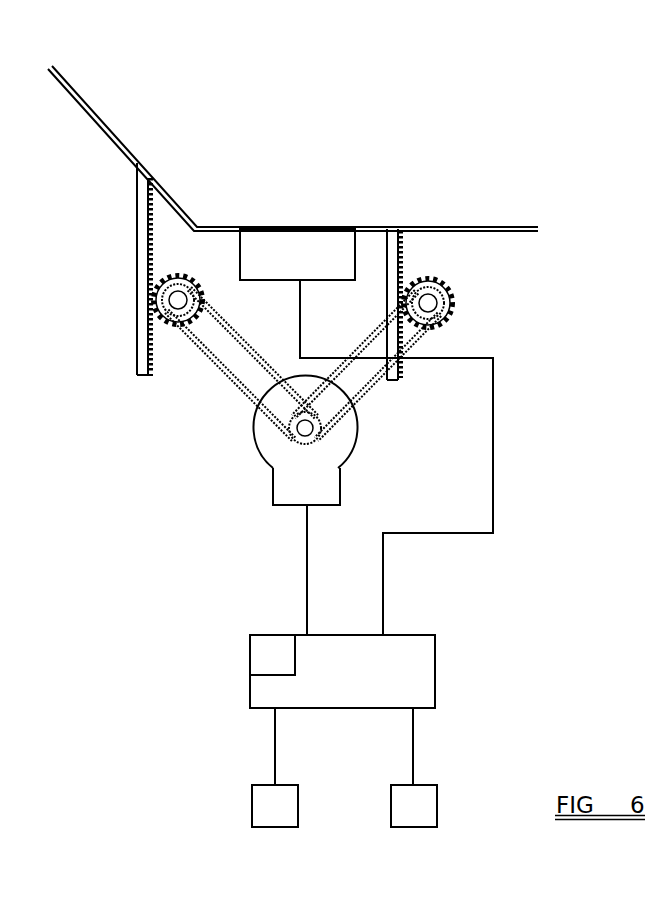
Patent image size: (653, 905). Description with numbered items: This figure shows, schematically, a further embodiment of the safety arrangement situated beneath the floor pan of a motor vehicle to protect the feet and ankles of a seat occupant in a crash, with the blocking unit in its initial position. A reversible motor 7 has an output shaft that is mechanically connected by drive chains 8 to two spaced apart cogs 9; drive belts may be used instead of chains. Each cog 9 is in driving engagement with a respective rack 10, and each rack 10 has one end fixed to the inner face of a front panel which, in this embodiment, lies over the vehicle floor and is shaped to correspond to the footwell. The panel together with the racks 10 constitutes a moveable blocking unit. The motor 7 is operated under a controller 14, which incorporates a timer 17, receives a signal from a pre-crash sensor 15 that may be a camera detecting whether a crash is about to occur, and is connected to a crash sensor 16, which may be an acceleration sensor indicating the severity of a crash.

The reversible motor 7 is at (278, 452).
The drive chains 8 is at (372, 397).
The cogs 9 is at (430, 305).
The rack 10 is at (178, 305).
The controller 14 is at (423, 683).
The pre-crash sensor 15 is at (252, 810).
The crash sensor 16 is at (422, 813).
The timer 17 is at (267, 653).